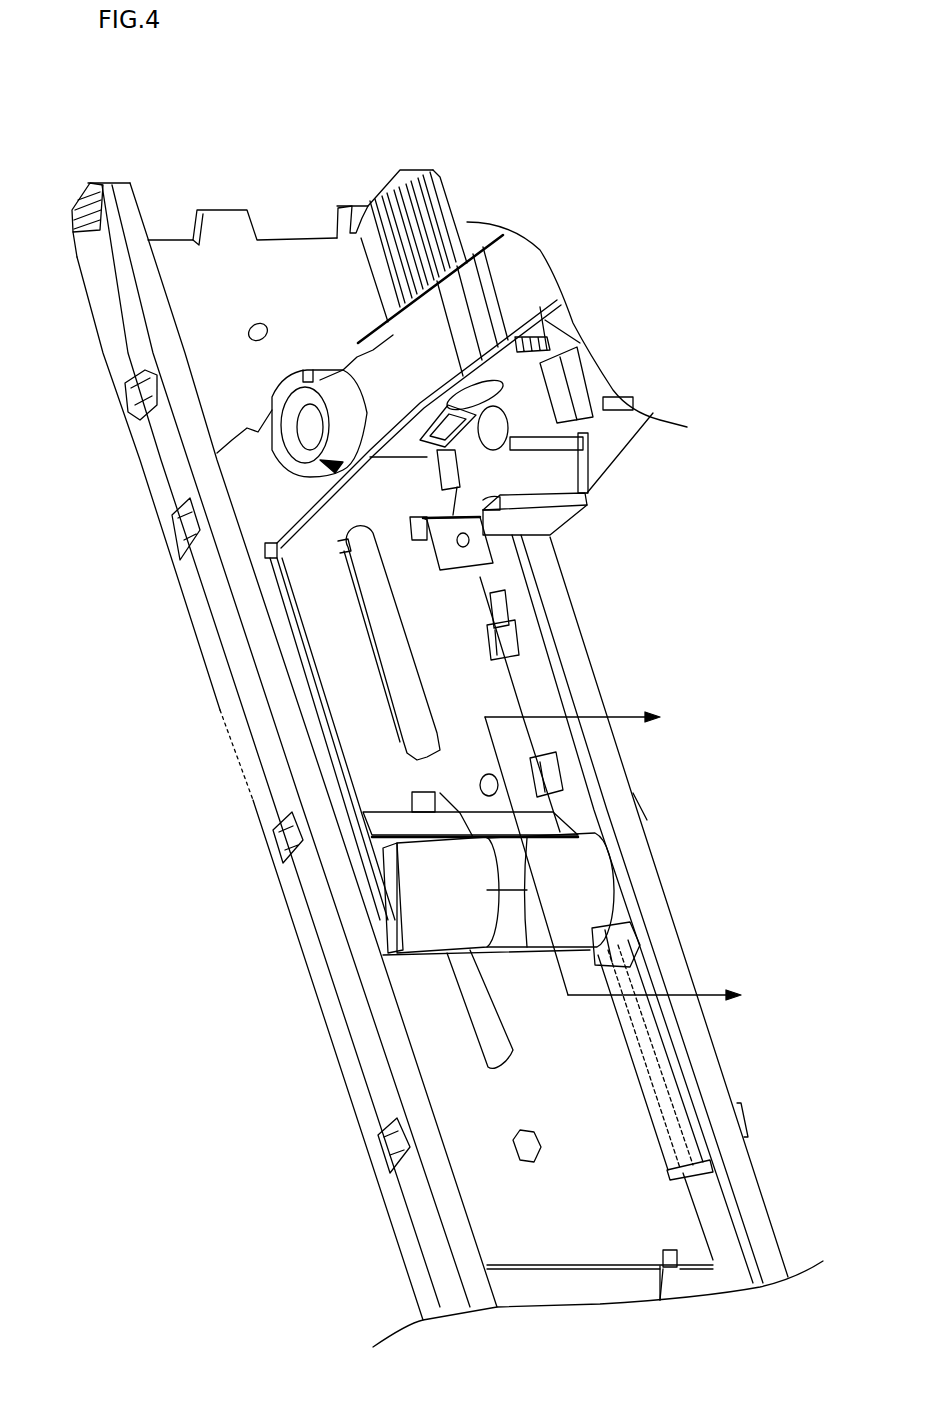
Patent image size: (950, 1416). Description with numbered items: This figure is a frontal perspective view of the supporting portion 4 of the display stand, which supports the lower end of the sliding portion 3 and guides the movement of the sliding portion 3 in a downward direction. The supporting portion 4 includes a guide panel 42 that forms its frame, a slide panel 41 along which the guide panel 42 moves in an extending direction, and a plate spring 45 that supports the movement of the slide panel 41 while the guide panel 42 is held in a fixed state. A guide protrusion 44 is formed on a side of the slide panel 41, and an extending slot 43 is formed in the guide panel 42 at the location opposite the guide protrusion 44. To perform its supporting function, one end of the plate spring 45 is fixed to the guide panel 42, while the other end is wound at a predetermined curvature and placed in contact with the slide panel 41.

The sliding portion 3 is at (372, 348).
The supporting portion 4 is at (97, 451).
The slide panel 41 is at (328, 605).
The guide panel 42 is at (253, 698).
The extending slot 43 is at (713, 1202).
The guide protrusion 44 is at (620, 953).
The plate spring 45 is at (430, 930).